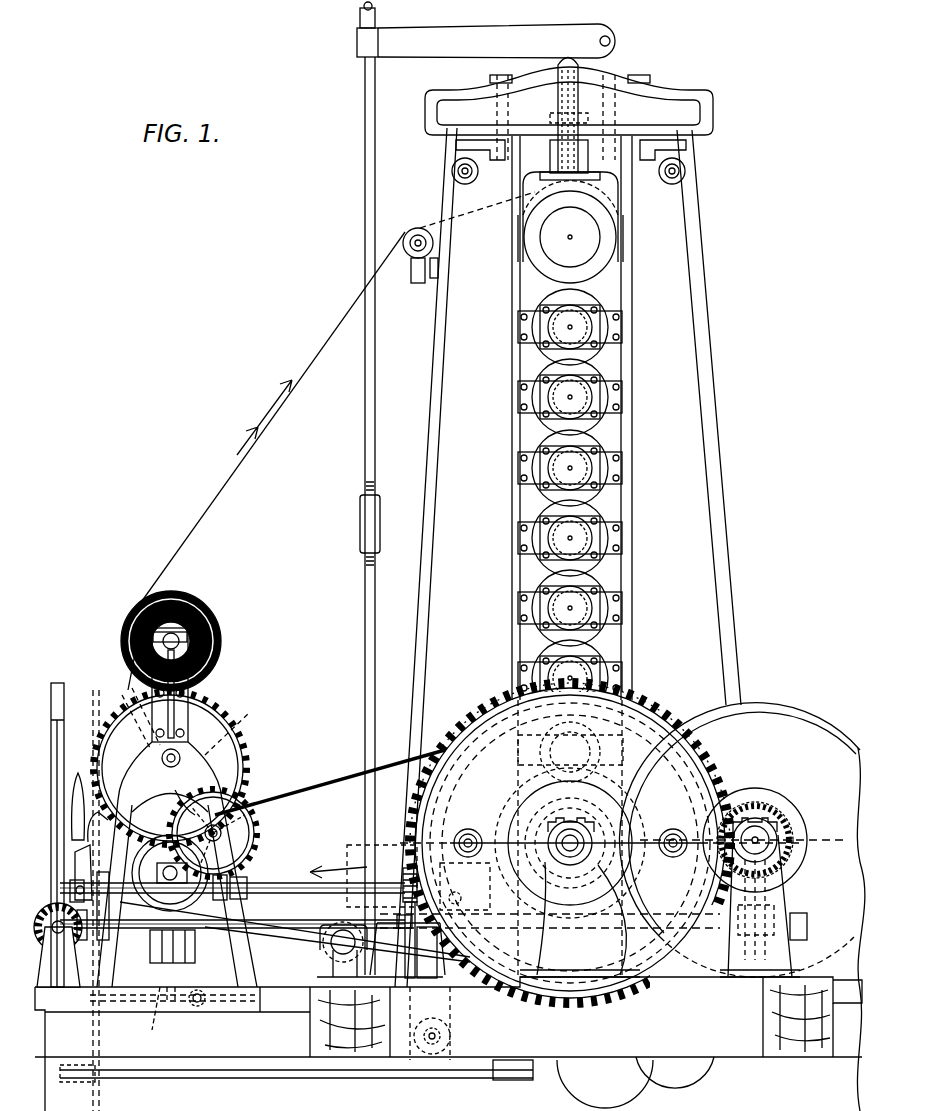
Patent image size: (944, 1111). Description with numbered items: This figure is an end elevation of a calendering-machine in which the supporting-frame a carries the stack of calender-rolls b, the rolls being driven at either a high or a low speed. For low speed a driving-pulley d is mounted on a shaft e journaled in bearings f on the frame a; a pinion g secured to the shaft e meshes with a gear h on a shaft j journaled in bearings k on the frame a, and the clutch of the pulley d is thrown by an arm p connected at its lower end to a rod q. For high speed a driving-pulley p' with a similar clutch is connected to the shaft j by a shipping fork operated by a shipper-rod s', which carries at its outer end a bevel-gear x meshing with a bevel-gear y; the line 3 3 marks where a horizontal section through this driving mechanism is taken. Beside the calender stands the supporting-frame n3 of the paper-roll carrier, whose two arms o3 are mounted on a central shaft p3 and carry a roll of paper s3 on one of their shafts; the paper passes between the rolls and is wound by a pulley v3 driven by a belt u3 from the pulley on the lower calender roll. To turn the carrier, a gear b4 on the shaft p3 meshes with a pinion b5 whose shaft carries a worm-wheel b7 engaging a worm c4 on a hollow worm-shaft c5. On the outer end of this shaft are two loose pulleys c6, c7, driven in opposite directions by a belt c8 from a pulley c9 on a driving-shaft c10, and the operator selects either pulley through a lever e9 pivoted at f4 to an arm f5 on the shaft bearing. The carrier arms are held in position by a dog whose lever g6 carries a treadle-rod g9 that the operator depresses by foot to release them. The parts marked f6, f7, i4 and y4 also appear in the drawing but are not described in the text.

The supporting-frame a is at (683, 356).
The calender-rolls b is at (583, 248).
The driving-pulley p' is at (600, 827).
The gear h is at (668, 705).
The shaft j is at (565, 857).
The bearings k is at (562, 823).
The rod q is at (551, 918).
The driving-pulley d is at (783, 723).
The shaft e is at (753, 827).
The pinion g is at (767, 817).
The bearings f is at (778, 825).
The section line 3 3 is at (441, 870).
The arm p is at (770, 906).
The roll of paper s3 is at (196, 596).
The supporting-frame of the paper-roll carrier n3 is at (220, 775).
The gear b4 is at (240, 724).
The central shaft p3 is at (200, 740).
The arms o3 is at (120, 692).
The rod f6 is at (123, 683).
The arm f7 is at (240, 792).
The pinion b5 is at (240, 832).
The belt u3 is at (338, 777).
The shipper-rod s' is at (178, 904).
The pulley v3 is at (157, 900).
The worm-shaft c5 is at (288, 882).
The worm-wheel b7 is at (245, 880).
The bevel-gear y is at (72, 890).
The worm c4 is at (230, 937).
The bevel-gear x is at (83, 940).
The upright bar i4 is at (49, 835).
The lever e9 is at (78, 791).
The pivot f4 is at (97, 824).
The arm f5 is at (89, 863).
The treadle-rod g9 is at (93, 1000).
The rod y4 is at (206, 998).
The lever g6 is at (156, 1010).
The pulley c6 is at (405, 862).
The pulley c7 is at (428, 832).
The belt c8 is at (415, 952).
The pulley c9 is at (450, 1030).
The driving-shaft c10 is at (436, 1040).